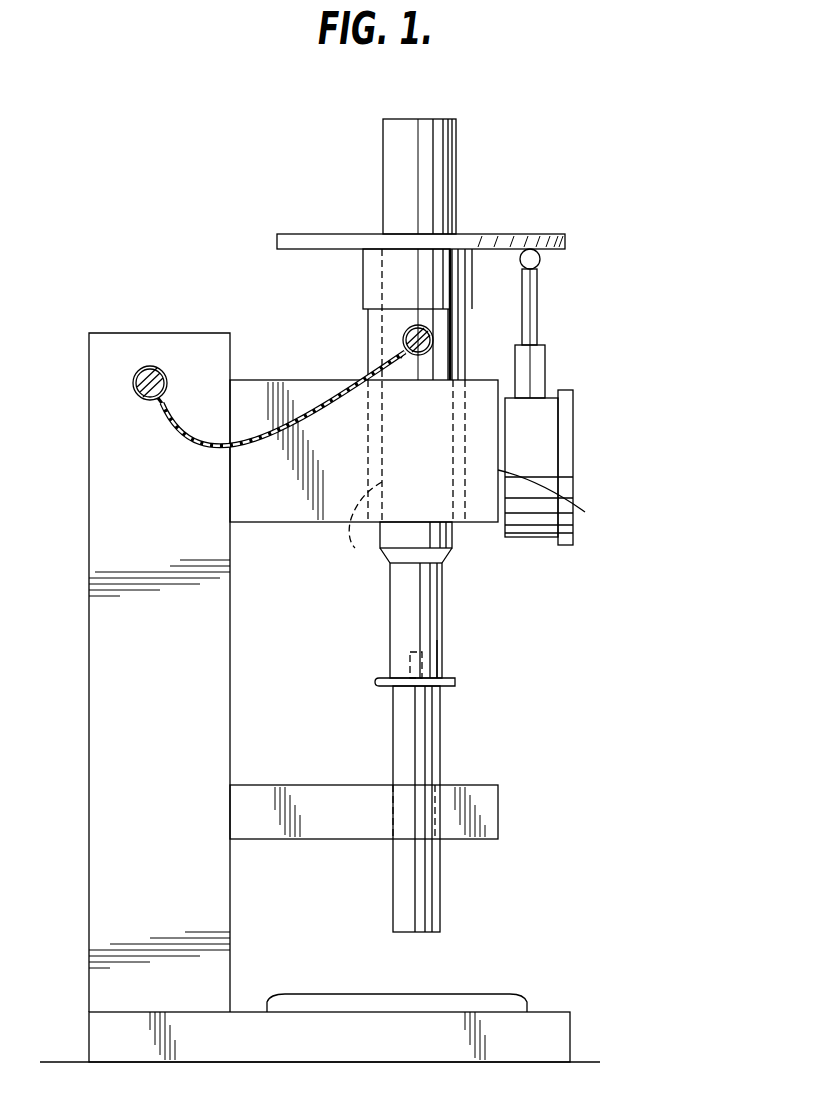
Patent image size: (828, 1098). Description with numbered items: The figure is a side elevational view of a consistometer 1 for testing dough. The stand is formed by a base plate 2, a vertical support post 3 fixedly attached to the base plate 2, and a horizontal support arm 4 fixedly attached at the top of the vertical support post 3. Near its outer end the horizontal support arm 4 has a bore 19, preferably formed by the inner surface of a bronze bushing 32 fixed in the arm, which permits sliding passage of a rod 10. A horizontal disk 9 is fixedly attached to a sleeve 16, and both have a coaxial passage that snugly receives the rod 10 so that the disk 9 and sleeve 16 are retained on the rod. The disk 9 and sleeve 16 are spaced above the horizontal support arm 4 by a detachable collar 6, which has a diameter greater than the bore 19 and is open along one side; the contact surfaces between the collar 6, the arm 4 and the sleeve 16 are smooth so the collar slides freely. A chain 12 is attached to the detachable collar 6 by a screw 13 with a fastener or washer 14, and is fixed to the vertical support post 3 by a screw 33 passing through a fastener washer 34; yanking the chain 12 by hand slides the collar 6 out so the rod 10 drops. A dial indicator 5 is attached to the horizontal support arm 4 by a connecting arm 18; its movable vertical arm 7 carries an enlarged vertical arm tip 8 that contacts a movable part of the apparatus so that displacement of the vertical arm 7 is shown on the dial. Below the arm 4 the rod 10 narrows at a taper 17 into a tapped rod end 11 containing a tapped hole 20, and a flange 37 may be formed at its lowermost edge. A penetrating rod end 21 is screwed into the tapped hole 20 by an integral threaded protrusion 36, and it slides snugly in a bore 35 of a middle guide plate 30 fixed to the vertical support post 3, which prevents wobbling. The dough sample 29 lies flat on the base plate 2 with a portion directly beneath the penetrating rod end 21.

The consistometer 1 is at (742, 422).
The base plate 2 is at (110, 1037).
The vertical support post 3 is at (102, 762).
The horizontal support arm 4 is at (268, 508).
The dial indicator 5 is at (576, 425).
The detachable collar 6 is at (370, 328).
The vertical arm 7 is at (538, 306).
The vertical arm tip 8 is at (541, 262).
The horizontal disk 9 is at (490, 233).
The rod 10 is at (456, 138).
The tapped rod end 11 is at (445, 617).
The chain 12 is at (178, 432).
The screw 13 is at (404, 350).
The fastener or washer 14 is at (403, 341).
The sleeve 16 is at (370, 276).
The taper 17 is at (444, 560).
The connecting arm 18 is at (558, 499).
The bore 19 is at (352, 525).
The tapped hole 20 is at (440, 658).
The penetrating rod end 21 is at (443, 733).
The dough sample 29 is at (470, 998).
The middle guide plate 30 is at (320, 797).
The bushing 32 is at (365, 533).
The screw 33 is at (145, 367).
The fastener washer 34 is at (135, 395).
The bore 35 is at (442, 800).
The threaded protrusion 36 is at (408, 662).
The flange 37 is at (457, 683).